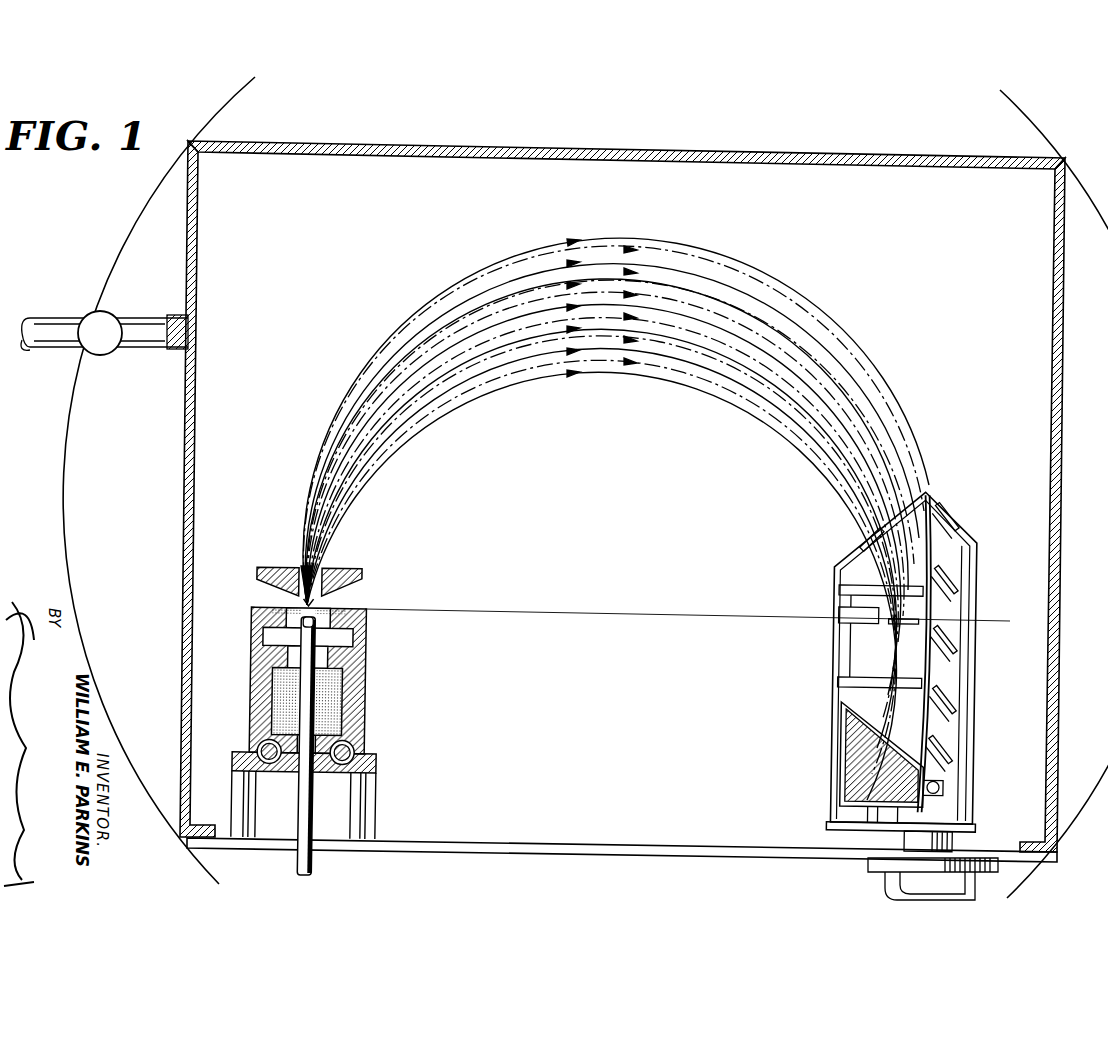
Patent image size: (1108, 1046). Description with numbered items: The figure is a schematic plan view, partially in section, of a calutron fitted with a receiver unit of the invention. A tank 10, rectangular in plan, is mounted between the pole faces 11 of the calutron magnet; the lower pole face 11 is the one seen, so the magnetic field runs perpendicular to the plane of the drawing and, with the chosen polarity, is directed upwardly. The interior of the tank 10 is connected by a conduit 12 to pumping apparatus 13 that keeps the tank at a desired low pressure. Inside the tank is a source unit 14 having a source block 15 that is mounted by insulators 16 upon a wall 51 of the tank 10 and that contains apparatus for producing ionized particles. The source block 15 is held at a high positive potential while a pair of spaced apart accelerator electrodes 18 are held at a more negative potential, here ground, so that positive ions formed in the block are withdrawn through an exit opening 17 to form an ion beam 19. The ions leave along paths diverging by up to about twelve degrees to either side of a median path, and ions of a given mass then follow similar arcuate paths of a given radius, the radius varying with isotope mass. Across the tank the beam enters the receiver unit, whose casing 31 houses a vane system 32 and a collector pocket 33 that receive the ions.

The tank 10 is at (183, 468).
The pole faces 11 is at (140, 230).
The conduit 12 is at (143, 327).
The pumping apparatus 13 is at (96, 312).
The source unit 14 is at (361, 736).
The source block 15 is at (357, 679).
The insulators 16 is at (352, 825).
The exit opening 17 is at (302, 604).
The accelerator electrodes 18 is at (293, 568).
The ion beam 19 is at (435, 326).
The casing 31 is at (978, 594).
The vane system 32 is at (954, 573).
The collector pocket 33 is at (854, 744).
The wall 51 is at (590, 840).